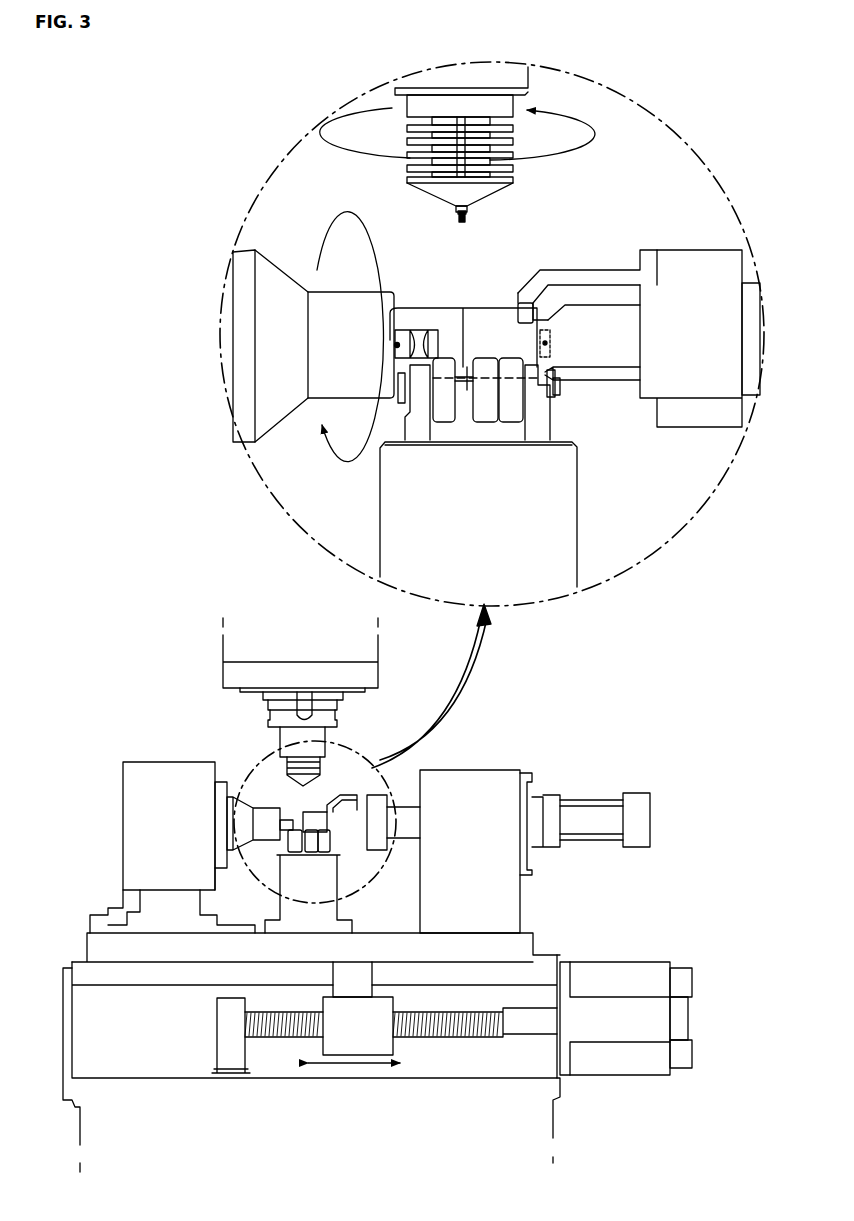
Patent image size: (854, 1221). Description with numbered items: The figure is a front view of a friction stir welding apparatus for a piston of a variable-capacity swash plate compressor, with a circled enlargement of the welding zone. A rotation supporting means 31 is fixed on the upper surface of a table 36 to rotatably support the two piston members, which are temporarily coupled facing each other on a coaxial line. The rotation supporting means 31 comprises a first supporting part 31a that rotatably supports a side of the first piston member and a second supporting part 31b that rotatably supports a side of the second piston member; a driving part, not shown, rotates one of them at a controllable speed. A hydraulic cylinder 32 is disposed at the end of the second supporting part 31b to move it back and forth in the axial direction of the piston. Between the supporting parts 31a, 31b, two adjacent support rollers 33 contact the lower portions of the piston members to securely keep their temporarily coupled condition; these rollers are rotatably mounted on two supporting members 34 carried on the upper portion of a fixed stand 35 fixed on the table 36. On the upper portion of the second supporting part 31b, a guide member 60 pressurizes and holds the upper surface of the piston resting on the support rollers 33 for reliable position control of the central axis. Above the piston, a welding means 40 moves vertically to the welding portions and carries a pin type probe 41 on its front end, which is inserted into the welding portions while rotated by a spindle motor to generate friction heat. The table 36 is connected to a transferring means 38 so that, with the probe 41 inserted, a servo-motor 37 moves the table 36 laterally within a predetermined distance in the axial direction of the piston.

The rotation supporting means 31 is at (478, 738).
The first supporting part 31a is at (242, 290).
The second supporting part 31b is at (700, 255).
The hydraulic cylinder 32 is at (597, 810).
The support rollers 33 is at (508, 412).
The supporting members 34 is at (418, 428).
The fixed stand 35 is at (543, 543).
The table 36 is at (500, 938).
The servo-motor 37 is at (627, 1010).
The transferring means 38 is at (443, 1045).
The welding means 40 is at (560, 99).
The pin type probe 41 is at (461, 222).
The guide member 60 is at (580, 272).